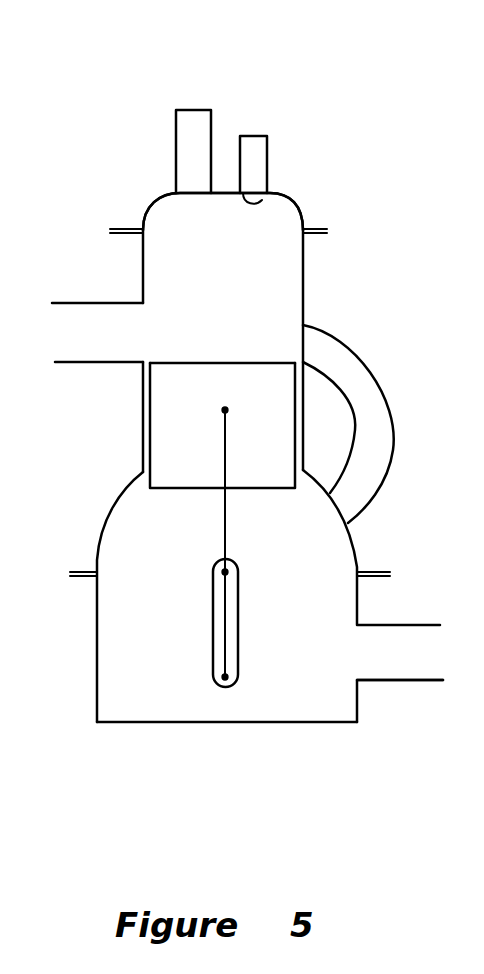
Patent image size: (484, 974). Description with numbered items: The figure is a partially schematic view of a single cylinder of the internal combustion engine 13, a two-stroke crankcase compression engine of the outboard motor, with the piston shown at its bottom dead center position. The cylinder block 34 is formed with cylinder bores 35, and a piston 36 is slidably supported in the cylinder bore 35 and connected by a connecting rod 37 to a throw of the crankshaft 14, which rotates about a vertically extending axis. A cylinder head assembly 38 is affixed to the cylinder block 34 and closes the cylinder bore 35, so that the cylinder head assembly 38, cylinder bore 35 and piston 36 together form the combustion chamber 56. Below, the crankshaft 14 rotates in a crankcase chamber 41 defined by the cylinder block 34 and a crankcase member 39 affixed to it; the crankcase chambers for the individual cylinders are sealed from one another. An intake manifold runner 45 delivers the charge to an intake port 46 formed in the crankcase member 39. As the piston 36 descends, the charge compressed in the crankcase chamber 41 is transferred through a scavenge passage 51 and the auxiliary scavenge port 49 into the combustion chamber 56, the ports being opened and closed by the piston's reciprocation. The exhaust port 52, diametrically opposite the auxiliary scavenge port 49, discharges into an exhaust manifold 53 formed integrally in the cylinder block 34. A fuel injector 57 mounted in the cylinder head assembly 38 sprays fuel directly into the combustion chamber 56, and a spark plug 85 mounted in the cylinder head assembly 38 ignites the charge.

The internal combustion engine 13 is at (98, 117).
The crankshaft 14 is at (238, 592).
The cylinder block 34 is at (143, 263).
The cylinder bore 35 is at (305, 262).
The piston 36 is at (163, 410).
The connecting rod 37 is at (222, 507).
The cylinder head assembly 38 is at (297, 202).
The crankcase member 39 is at (203, 722).
The crankcase chamber 41 is at (170, 650).
The intake manifold runner 45 is at (400, 660).
The intake port 46 is at (357, 678).
The auxiliary scavenge port 49 is at (303, 347).
The scavenge passage 51 is at (377, 450).
The exhaust port 52 is at (143, 332).
The exhaust manifold 53 is at (100, 348).
The combustion chamber 56 is at (214, 260).
The fuel injector 57 is at (190, 123).
The spark plug 85 is at (262, 152).